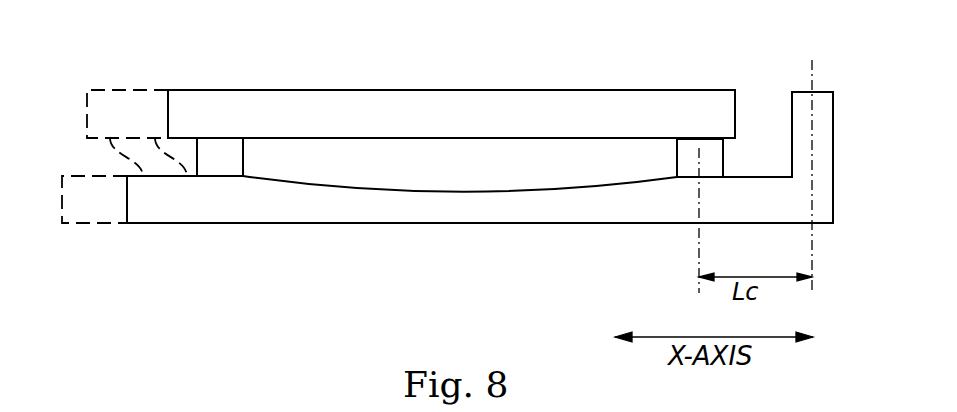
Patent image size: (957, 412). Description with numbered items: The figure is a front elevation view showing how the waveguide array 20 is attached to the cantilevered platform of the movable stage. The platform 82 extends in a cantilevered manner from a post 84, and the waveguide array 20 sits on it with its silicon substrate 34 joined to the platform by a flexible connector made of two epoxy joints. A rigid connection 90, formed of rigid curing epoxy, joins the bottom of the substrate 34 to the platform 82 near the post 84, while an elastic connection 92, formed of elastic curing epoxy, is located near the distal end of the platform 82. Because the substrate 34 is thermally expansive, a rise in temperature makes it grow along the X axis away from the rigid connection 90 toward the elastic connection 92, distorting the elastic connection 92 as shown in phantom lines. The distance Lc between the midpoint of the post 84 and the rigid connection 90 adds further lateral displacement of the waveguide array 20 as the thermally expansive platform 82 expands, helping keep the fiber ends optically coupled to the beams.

The waveguide array 20 is at (502, 78).
The substrate 34 is at (655, 102).
The platform 82 is at (356, 213).
The post 84 is at (825, 160).
The rigid connection 90 is at (715, 157).
The elastic connection 92 is at (232, 153).